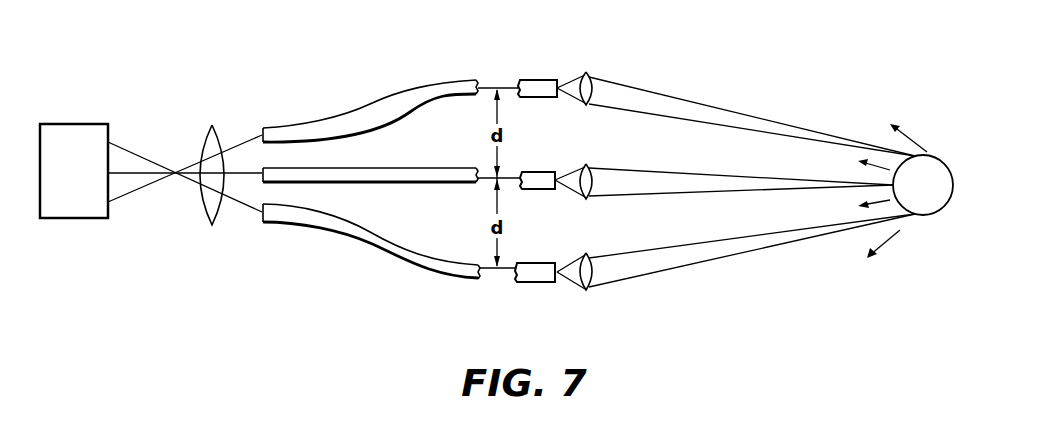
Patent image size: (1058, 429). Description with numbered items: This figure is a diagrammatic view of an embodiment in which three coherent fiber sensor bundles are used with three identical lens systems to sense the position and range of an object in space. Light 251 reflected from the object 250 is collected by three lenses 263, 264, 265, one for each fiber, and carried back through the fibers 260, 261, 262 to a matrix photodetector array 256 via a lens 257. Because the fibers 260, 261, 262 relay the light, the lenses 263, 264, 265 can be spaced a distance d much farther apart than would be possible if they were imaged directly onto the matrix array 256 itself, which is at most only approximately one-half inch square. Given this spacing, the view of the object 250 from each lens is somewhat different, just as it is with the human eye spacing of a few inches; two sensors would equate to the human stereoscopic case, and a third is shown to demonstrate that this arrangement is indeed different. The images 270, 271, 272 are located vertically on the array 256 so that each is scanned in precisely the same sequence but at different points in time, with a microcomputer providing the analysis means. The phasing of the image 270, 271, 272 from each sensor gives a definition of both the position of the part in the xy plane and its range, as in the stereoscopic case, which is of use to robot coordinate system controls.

The object 250 is at (927, 208).
The reflected light 251 is at (927, 150).
The matrix photodetector array 256 is at (94, 182).
The lens 257 is at (212, 222).
The fiber 260 is at (450, 85).
The fiber 261 is at (448, 172).
The fiber 262 is at (448, 273).
The lens 263 is at (590, 76).
The lens 264 is at (590, 168).
The lens 265 is at (590, 287).
The image 270 is at (557, 85).
The image 271 is at (556, 172).
The image 272 is at (557, 286).